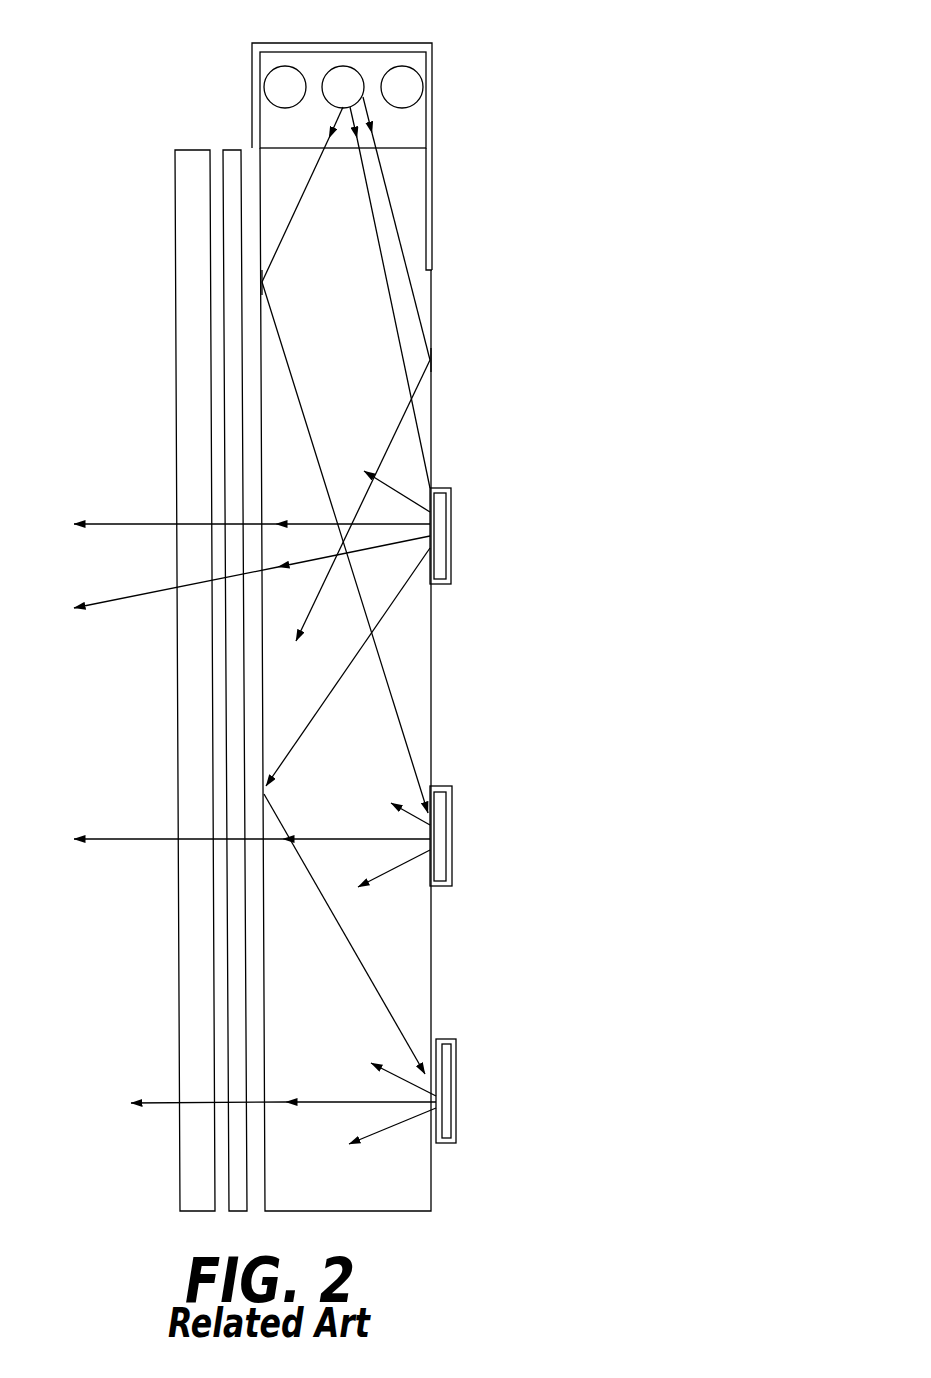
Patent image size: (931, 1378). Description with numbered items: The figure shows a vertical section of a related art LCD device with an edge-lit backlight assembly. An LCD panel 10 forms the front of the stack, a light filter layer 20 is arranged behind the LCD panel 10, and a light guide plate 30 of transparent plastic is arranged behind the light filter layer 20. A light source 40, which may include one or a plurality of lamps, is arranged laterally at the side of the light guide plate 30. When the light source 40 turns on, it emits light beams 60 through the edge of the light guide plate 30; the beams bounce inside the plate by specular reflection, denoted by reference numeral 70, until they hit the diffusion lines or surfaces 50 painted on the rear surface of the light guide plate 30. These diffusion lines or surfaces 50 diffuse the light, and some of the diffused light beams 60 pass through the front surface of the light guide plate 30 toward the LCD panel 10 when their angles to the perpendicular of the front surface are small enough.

The LCD panel 10 is at (185, 147).
The light filter layer 20 is at (233, 147).
The light guide plate 30 is at (433, 1198).
The light source 40 is at (434, 82).
The diffusion lines or surfaces 50 is at (453, 537).
The light beams 60 is at (393, 182).
The specular reflection 70 is at (265, 283).